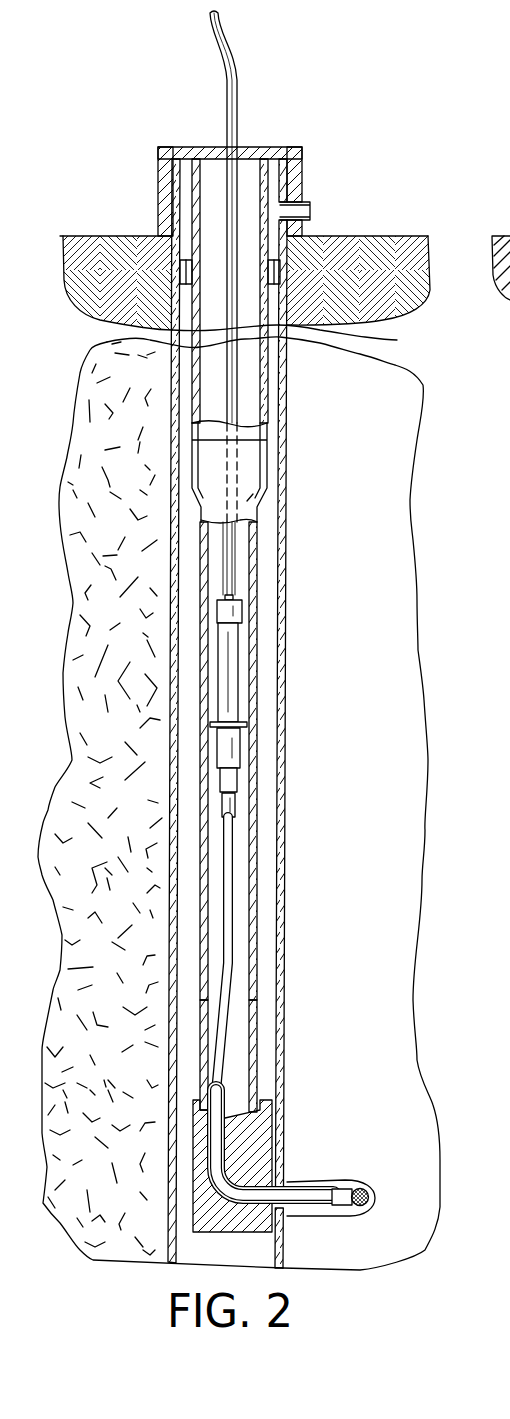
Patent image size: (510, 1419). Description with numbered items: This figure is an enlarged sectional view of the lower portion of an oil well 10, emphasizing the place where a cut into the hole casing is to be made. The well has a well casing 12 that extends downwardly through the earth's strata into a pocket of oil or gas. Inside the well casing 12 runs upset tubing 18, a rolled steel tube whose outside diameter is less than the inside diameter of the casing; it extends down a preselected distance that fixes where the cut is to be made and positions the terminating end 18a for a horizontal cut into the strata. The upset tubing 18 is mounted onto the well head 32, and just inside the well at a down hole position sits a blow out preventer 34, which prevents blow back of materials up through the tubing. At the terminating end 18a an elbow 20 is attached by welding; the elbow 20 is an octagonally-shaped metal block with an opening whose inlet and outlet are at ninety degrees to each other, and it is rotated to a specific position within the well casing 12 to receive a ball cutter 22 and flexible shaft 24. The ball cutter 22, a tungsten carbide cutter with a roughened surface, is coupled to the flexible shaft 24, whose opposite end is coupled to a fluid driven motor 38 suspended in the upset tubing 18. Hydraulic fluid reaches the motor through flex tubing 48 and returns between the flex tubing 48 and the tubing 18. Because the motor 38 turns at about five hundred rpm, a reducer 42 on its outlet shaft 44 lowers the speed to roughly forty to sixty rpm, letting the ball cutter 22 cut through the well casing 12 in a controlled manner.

The oil well 10 is at (354, 180).
The well casing 12 is at (287, 552).
The upset tubing 18 is at (257, 471).
The terminating end 18a is at (254, 1100).
The elbow 20 is at (260, 1153).
The ball cutter 22 is at (367, 1187).
The flexible shaft 24 is at (233, 870).
The well head 32 is at (252, 147).
The blow out preventer 34 is at (273, 268).
The fluid driven motor 38 is at (230, 655).
The reducer 42 is at (229, 783).
The outlet shaft 44 is at (232, 752).
The flex tubing 48 is at (236, 70).